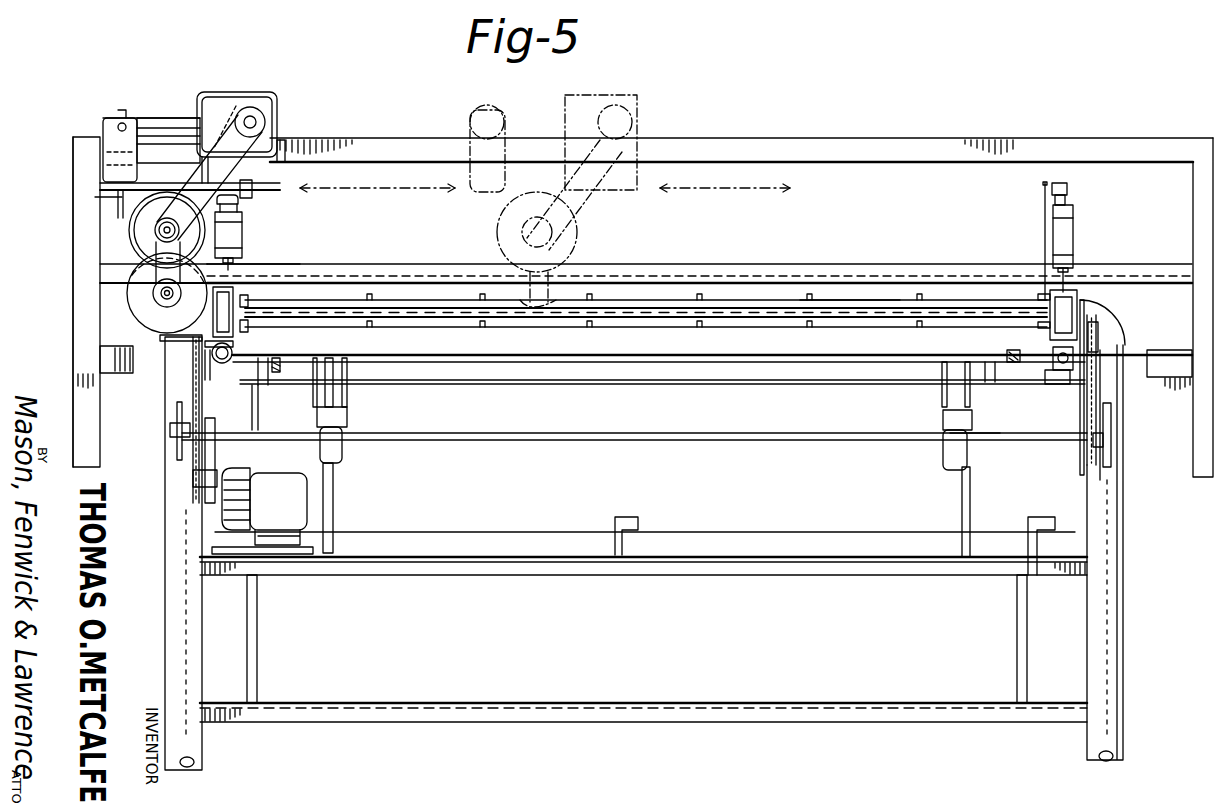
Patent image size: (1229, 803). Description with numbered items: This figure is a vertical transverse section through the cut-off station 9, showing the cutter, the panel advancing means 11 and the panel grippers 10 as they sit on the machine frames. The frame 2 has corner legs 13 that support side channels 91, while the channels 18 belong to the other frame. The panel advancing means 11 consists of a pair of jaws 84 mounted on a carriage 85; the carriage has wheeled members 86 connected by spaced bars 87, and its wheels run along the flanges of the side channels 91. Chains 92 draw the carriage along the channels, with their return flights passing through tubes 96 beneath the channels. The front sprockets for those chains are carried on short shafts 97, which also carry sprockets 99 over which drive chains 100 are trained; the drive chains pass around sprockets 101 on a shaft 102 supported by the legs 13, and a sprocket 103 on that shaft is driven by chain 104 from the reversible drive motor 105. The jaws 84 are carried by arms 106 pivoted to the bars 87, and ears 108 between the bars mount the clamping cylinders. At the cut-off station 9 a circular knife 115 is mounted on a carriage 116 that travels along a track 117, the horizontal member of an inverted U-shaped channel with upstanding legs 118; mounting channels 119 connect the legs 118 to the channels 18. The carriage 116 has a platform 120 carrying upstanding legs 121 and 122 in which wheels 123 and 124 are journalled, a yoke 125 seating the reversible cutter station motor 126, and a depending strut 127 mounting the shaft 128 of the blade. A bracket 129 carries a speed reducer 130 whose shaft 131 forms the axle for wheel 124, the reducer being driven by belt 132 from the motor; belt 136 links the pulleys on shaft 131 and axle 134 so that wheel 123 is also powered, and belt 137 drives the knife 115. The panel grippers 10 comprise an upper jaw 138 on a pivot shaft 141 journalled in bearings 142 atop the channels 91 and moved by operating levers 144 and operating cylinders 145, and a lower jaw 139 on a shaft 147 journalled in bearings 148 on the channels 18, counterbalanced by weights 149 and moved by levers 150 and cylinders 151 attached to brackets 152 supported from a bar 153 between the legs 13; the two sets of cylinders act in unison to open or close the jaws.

The frame 2 is at (1133, 574).
The cut-off station 9 is at (130, 102).
The panel grippers 10 is at (986, 425).
The panel advancing means 11 is at (857, 290).
The corner legs 13 is at (165, 635).
The channels 18 is at (73, 228).
The jaws 84 is at (739, 301).
The carriage 85 is at (1083, 280).
The wheeled members 86 is at (240, 287).
The bars 87 is at (248, 331).
The side channels 91 is at (190, 300).
The chains 92 is at (232, 346).
The tubes 96 is at (232, 371).
The short shafts 97 is at (210, 371).
The sprockets 99 is at (205, 342).
The drive chains 100 is at (1100, 394).
The sprockets 101 is at (182, 458).
The shaft 102 is at (1020, 440).
The sprocket 103 is at (258, 410).
The chain 104 is at (216, 452).
The drive motor 105 is at (288, 496).
The arms 106 is at (380, 293).
The ears 108 is at (884, 333).
The knife 115 is at (130, 300).
The carriage 116 is at (300, 176).
The track 117 is at (364, 138).
The upstanding legs 118 is at (1193, 208).
The mounting channels 119 is at (80, 356).
The platform 120 is at (300, 191).
The upstanding legs 121 is at (100, 150).
The upstanding legs 122 is at (286, 149).
The wheels 123 is at (118, 117).
The wheels 124 is at (237, 105).
The yoke 125 is at (116, 206).
The cutter station motor 126 is at (136, 222).
The depending strut 127 is at (150, 284).
The shaft 128 is at (137, 313).
The bracket 129 is at (200, 150).
The speed reducer 130 is at (215, 92).
The shaft 131 is at (258, 108).
The belt 132 is at (246, 198).
The axle 134 is at (106, 124).
The belt 136 is at (159, 118).
The belt 137 is at (122, 240).
The jaw 138 is at (650, 264).
The jaw 139 is at (638, 357).
The pivot shaft 141 is at (272, 262).
The bearings 142 is at (240, 250).
The operating levers 144 is at (242, 228).
The operating cylinders 145 is at (242, 216).
The shaft 147 is at (428, 360).
The bearings 148 is at (1055, 400).
The weights 149 is at (262, 384).
The levers 150 is at (348, 369).
The cylinders 151 is at (342, 440).
The brackets 152 is at (338, 493).
The bar 153 is at (413, 567).